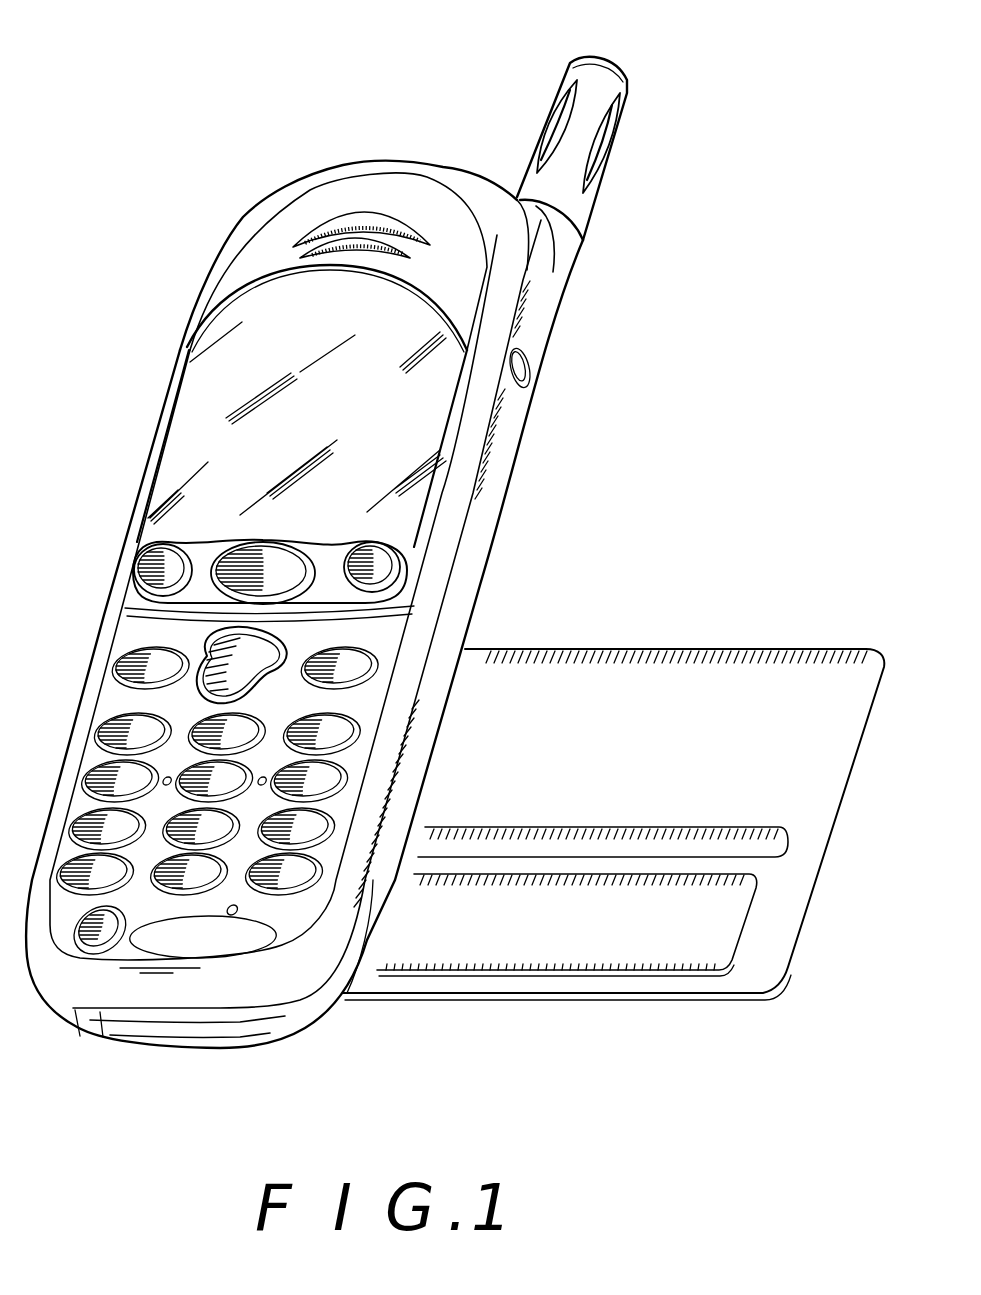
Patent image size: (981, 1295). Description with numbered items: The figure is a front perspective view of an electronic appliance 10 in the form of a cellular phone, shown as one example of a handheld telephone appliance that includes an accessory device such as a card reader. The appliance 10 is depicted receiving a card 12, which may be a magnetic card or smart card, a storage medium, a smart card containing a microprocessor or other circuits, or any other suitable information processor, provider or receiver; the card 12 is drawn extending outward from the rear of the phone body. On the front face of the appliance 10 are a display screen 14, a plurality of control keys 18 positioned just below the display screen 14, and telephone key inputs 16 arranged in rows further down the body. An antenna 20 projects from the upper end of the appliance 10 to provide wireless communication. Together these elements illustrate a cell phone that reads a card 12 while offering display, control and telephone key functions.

The electronic appliance 10 is at (357, 130).
The card 12 is at (681, 665).
The display screen 14 is at (208, 428).
The telephone key inputs 16 is at (133, 665).
The control keys 18 is at (160, 574).
The antenna 20 is at (557, 107).